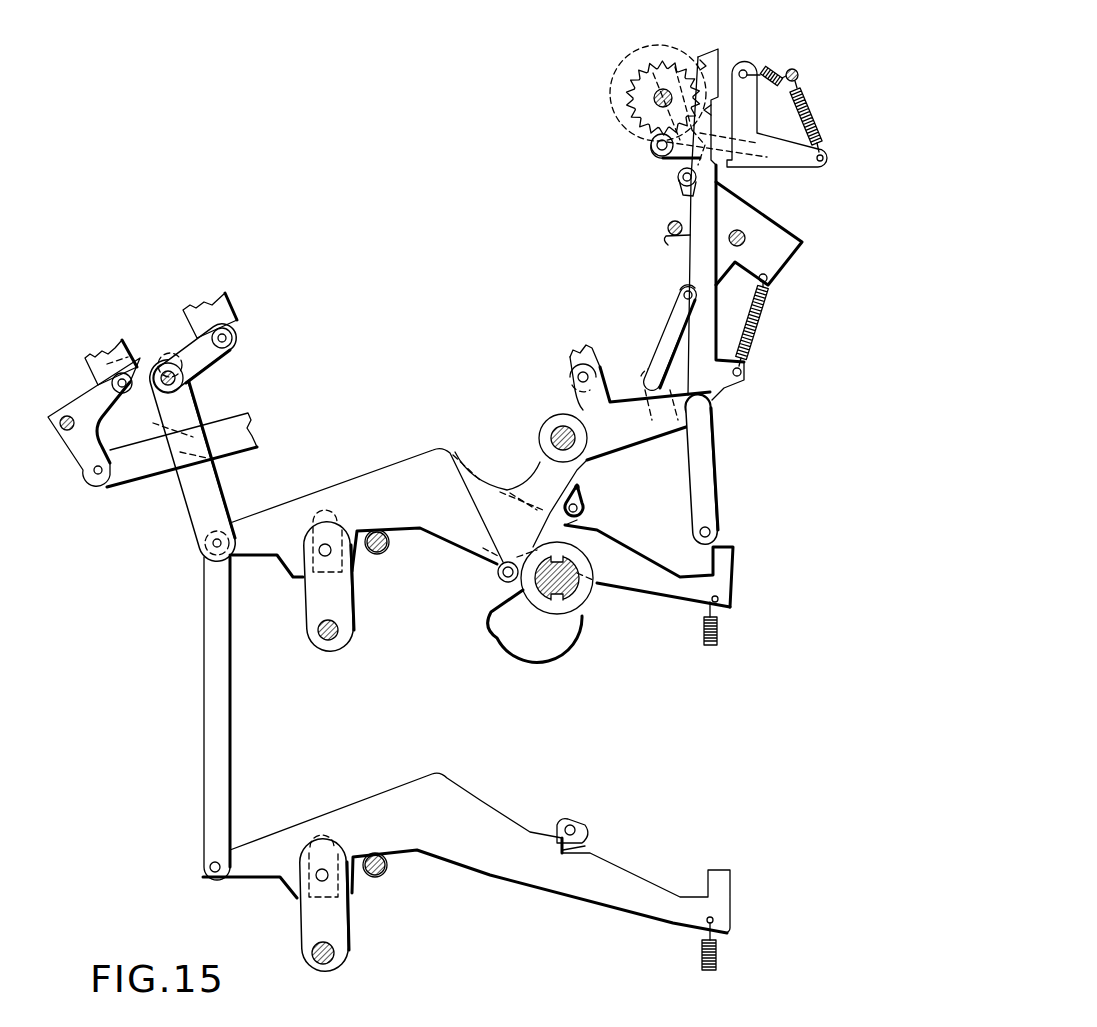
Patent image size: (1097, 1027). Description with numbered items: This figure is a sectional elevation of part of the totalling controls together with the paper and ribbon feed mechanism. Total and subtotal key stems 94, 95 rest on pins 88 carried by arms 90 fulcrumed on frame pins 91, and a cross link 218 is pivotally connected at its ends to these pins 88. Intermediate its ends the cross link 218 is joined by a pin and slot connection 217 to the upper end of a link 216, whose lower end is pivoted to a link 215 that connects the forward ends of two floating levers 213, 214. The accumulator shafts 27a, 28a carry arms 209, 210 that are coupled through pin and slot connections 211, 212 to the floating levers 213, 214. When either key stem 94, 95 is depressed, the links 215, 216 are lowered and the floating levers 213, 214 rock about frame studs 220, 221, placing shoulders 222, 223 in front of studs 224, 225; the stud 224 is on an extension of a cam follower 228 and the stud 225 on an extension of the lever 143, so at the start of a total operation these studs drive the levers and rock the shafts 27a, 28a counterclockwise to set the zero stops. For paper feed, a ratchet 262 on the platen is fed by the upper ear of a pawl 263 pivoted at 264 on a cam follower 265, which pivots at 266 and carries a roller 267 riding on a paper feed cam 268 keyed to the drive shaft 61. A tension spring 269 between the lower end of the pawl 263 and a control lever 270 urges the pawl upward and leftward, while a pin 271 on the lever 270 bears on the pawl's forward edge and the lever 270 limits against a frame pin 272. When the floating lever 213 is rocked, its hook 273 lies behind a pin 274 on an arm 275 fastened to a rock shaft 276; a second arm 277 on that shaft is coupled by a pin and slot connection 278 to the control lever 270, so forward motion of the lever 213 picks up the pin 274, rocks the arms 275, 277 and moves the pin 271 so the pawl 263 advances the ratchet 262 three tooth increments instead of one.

The second shaft 27a is at (340, 634).
The second shaft 28a is at (336, 955).
The drive shaft 61 is at (575, 592).
The pin 88 is at (123, 393).
The arm 90 is at (80, 400).
The frame pin 91 is at (62, 428).
The key stem 94 is at (212, 303).
The key stem 95 is at (108, 348).
The lever 143 is at (555, 828).
The arm 209 is at (348, 597).
The arm 210 is at (333, 916).
The pin and slot connection 211 is at (330, 545).
The pin and slot connection 212 is at (328, 870).
The floating lever 213 is at (376, 478).
The floating lever 214 is at (394, 788).
The link 215 is at (204, 700).
The link 216 is at (196, 508).
The pin and slot connection 217 is at (166, 360).
The cross link 218 is at (143, 357).
The frame stud 220 is at (390, 547).
The frame stud 221 is at (388, 872).
The shoulder 222 is at (577, 520).
The shoulder 223 is at (577, 846).
The stud 224 is at (580, 500).
The stud 225 is at (580, 826).
The cam follower 228 is at (579, 486).
The ratchet 262 is at (628, 95).
The pawl 263 is at (718, 60).
The pivot 264 is at (712, 408).
The cam follower 265 is at (565, 415).
The pivot 266 is at (575, 434).
The roller 267 is at (497, 576).
The paper feed cam 268 is at (556, 640).
The tension spring 269 is at (752, 338).
The control lever 270 is at (785, 262).
The pin 271 is at (682, 186).
The frame pin 272 is at (664, 237).
The hook 273 is at (733, 553).
The pin 274 is at (712, 528).
The arm 275 is at (692, 467).
The rock shaft 276 is at (648, 378).
The second arm 277 is at (668, 330).
The pin and slot connection 278 is at (685, 295).